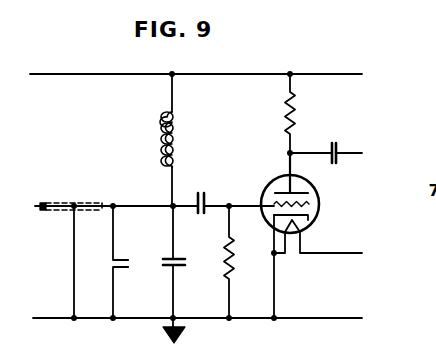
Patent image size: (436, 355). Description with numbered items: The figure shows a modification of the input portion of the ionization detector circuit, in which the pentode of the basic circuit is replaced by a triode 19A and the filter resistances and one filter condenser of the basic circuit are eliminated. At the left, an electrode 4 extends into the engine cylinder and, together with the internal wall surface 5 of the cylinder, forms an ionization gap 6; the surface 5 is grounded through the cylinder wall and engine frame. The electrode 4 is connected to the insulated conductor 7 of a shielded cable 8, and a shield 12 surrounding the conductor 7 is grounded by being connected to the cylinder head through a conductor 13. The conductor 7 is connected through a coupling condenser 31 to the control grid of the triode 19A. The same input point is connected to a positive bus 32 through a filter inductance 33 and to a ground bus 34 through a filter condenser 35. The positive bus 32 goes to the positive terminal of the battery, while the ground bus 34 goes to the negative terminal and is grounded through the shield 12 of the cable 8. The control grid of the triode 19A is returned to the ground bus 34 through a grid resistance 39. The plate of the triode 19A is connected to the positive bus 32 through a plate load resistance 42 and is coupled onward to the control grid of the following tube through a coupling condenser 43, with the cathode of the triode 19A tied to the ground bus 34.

The electrode 4 is at (121, 260).
The internal wall surface 5 is at (125, 268).
The ionization gap 6 is at (128, 263).
The insulated conductor 7 is at (38, 206).
The shielded cable 8 is at (61, 195).
The shield 12 is at (59, 213).
The conductor 13 is at (74, 264).
The triode 19A is at (317, 192).
The coupling condenser 31 is at (200, 191).
The positive bus 32 is at (216, 72).
The filter inductance 33 is at (176, 143).
The ground bus 34 is at (256, 319).
The filter condenser 35 is at (185, 262).
The grid resistance 39 is at (235, 262).
The plate load resistance 42 is at (286, 114).
The coupling condenser 43 is at (334, 143).